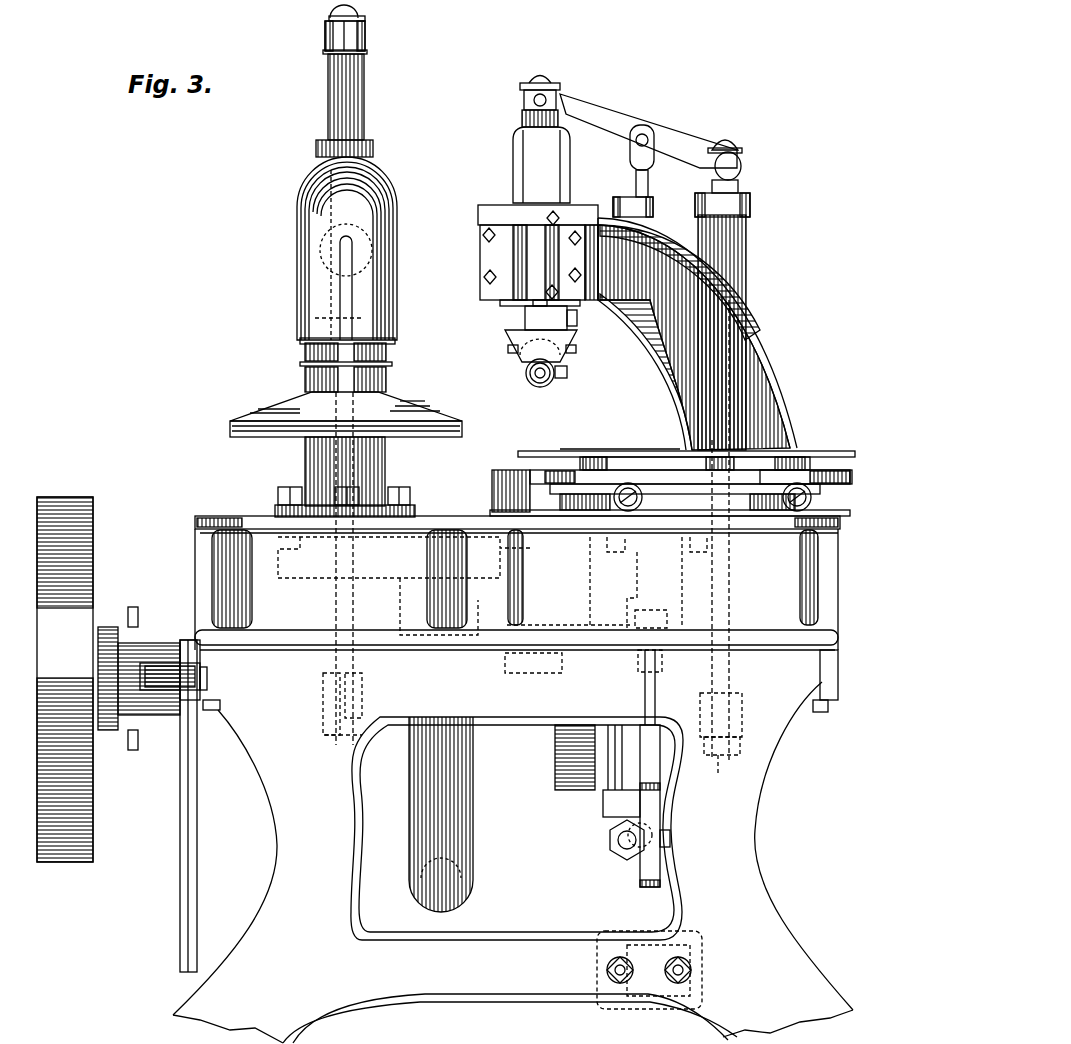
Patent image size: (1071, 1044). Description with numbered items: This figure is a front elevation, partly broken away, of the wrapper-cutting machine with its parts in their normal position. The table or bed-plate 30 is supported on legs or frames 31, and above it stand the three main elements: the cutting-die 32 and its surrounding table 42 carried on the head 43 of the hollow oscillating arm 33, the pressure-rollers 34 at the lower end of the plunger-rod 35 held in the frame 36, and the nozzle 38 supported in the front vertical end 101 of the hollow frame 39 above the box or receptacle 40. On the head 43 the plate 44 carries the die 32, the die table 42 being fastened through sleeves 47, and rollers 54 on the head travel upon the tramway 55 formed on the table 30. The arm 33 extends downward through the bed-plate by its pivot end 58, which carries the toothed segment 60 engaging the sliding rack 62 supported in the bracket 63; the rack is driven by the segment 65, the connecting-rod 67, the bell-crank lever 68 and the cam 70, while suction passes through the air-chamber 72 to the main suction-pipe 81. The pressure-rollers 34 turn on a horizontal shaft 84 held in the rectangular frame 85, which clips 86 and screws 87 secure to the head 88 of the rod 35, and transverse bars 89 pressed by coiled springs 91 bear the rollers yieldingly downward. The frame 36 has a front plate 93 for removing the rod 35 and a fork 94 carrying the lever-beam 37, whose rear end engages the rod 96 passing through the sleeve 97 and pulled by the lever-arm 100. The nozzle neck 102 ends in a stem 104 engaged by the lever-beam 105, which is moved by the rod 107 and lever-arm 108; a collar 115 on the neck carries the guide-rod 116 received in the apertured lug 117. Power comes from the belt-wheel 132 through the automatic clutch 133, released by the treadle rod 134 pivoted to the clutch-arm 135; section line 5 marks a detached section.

The section line 5 is at (724, 136).
The table or bed-plate 30 is at (262, 516).
The legs or frames 31 is at (513, 846).
The cutting-die 32 is at (620, 450).
The oscillating arm 33 is at (504, 482).
The pressure-rollers 34 is at (545, 387).
The plunger-rod 35 is at (541, 140).
The frame 36 is at (697, 334).
The lever-beam 37 is at (612, 118).
The nozzle 38 is at (432, 431).
The hollow frame or arm 39 is at (312, 216).
The box or receptacle 40 is at (516, 589).
The table 42 is at (552, 452).
The head 43 is at (740, 500).
The plate 44 is at (790, 470).
The sleeves 47 is at (680, 463).
The rollers 54 is at (643, 498).
The tramway 55 is at (470, 531).
The pivot end 58 is at (533, 669).
The toothed segment 60 is at (612, 652).
The sliding rack 62 is at (650, 613).
The bracket 63 is at (636, 577).
The toothed segment 65 is at (653, 748).
The connecting-rod 67 is at (610, 838).
The bell-crank lever 68 is at (624, 772).
The cam 70 is at (575, 757).
The air-chamber 72 is at (300, 564).
The main suction-pipe 81 is at (456, 814).
The horizontal shaft 84 is at (531, 378).
The rectangular frame 85 is at (541, 346).
The clips 86 is at (546, 315).
The screws 87 is at (508, 305).
The head 88 is at (568, 320).
The transverse bars 89 is at (568, 372).
The coiled springs 91 is at (508, 350).
The front plate 93 is at (480, 252).
The fork 94 is at (647, 196).
The rod 96 is at (733, 148).
The sleeve 97 is at (745, 262).
The lever-arm 100 is at (742, 716).
The front vertical end 101 is at (393, 212).
The neck 102 is at (378, 362).
The stem 104 is at (362, 110).
The lever-beam 105 is at (364, 44).
The rod 107 is at (336, 660).
The lever-arm 108 is at (323, 690).
The collar 115 is at (306, 378).
The guide-rod 116 is at (352, 283).
The apertured lug 117 is at (320, 350).
The belt-wheel 132 is at (65, 679).
The automatic clutch 133 is at (112, 627).
The rod 134 is at (196, 812).
The clutch-arm 135 is at (160, 663).